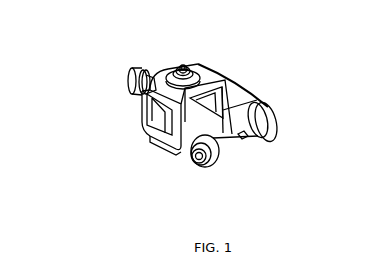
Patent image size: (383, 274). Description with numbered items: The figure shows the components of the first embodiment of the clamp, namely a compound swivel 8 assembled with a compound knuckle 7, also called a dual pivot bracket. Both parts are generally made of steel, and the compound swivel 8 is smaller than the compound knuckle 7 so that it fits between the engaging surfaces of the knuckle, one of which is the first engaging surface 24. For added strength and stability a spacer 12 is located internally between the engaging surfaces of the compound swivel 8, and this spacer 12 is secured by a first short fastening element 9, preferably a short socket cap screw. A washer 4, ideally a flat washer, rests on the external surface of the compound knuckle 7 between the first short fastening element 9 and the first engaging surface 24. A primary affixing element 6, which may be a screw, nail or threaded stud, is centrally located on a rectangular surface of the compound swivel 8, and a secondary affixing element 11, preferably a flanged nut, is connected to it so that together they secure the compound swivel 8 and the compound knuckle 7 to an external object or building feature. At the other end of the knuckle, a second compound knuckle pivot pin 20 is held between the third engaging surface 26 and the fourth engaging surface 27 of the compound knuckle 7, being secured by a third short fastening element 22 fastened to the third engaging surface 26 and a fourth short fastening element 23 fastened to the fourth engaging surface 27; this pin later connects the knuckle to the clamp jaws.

The washer 4 is at (202, 78).
The primary affixing element 6 is at (153, 70).
The compound knuckle 7 is at (195, 188).
The compound swivel 8 is at (140, 117).
The first short fastening element 9 is at (188, 64).
The secondary affixing element 11 is at (133, 66).
The spacer 12 is at (150, 133).
The second compound knuckle pivot pin 20 is at (243, 143).
The third short fastening element 22 is at (270, 114).
The fourth short fastening element 23 is at (192, 163).
The first engaging surface 24 is at (141, 81).
The third engaging surface 26 is at (247, 94).
The fourth engaging surface 27 is at (170, 153).